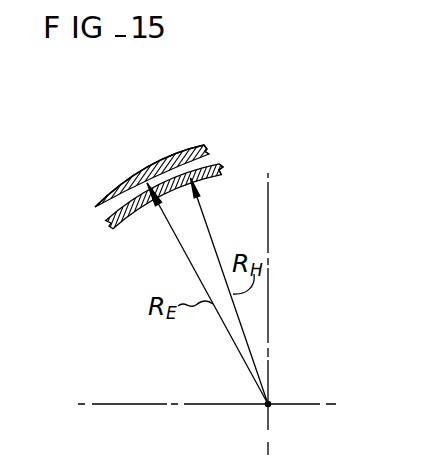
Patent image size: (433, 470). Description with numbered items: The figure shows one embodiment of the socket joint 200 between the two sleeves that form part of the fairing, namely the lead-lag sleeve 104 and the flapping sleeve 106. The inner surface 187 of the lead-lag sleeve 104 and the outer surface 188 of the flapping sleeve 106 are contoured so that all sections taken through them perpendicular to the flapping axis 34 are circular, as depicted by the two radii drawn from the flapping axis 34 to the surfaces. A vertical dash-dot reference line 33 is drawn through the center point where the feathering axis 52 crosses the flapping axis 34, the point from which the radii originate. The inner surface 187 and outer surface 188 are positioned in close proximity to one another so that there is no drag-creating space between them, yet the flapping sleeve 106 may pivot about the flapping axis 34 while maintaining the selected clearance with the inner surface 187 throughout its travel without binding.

The socket joint 200 is at (199, 132).
The inner surface 187 is at (167, 167).
The lead-lag sleeve 104 is at (117, 192).
The flapping sleeve 106 is at (141, 221).
The outer surface 188 is at (208, 159).
The vertical axis 33 is at (272, 236).
The feathering axis 52 is at (122, 403).
The flapping axis 34 is at (270, 402).